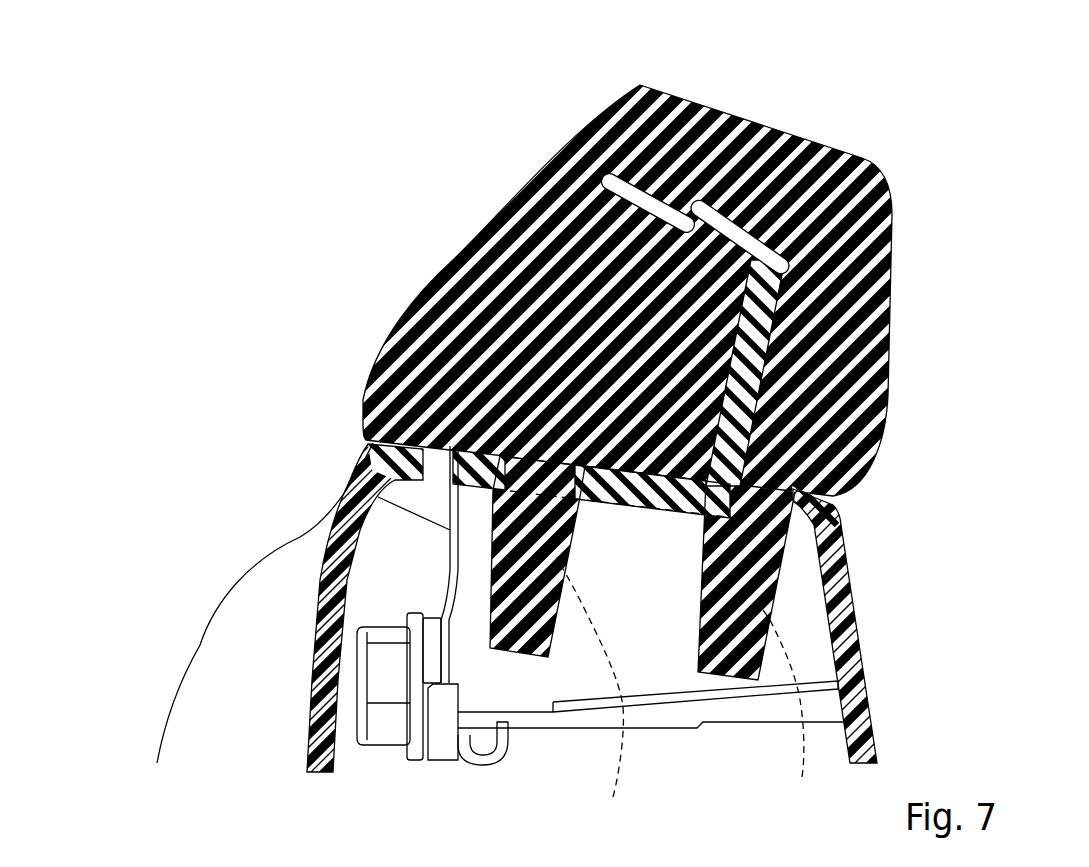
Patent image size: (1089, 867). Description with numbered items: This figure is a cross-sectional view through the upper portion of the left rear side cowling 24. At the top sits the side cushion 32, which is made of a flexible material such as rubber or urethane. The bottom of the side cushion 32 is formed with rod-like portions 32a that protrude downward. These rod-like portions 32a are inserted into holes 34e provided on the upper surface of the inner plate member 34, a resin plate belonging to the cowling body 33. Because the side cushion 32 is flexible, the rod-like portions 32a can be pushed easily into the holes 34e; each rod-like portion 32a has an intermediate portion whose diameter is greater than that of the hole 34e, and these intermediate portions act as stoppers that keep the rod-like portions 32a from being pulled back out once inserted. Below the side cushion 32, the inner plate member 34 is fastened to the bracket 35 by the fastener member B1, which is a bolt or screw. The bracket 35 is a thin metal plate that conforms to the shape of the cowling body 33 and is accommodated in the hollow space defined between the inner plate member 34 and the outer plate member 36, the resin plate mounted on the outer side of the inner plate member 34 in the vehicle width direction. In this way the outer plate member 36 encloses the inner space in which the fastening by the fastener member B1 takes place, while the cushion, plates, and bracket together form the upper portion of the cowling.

The left rear side cowling 24 is at (544, 421).
The side cushion 32 is at (757, 123).
The rod-like portions 32a is at (515, 657).
The cowling body 33 is at (178, 700).
The inner plate member 34 is at (848, 563).
The holes 34e is at (692, 691).
The bracket 35 is at (427, 745).
The outer plate member 36 is at (307, 557).
The fastener member B1 is at (373, 750).